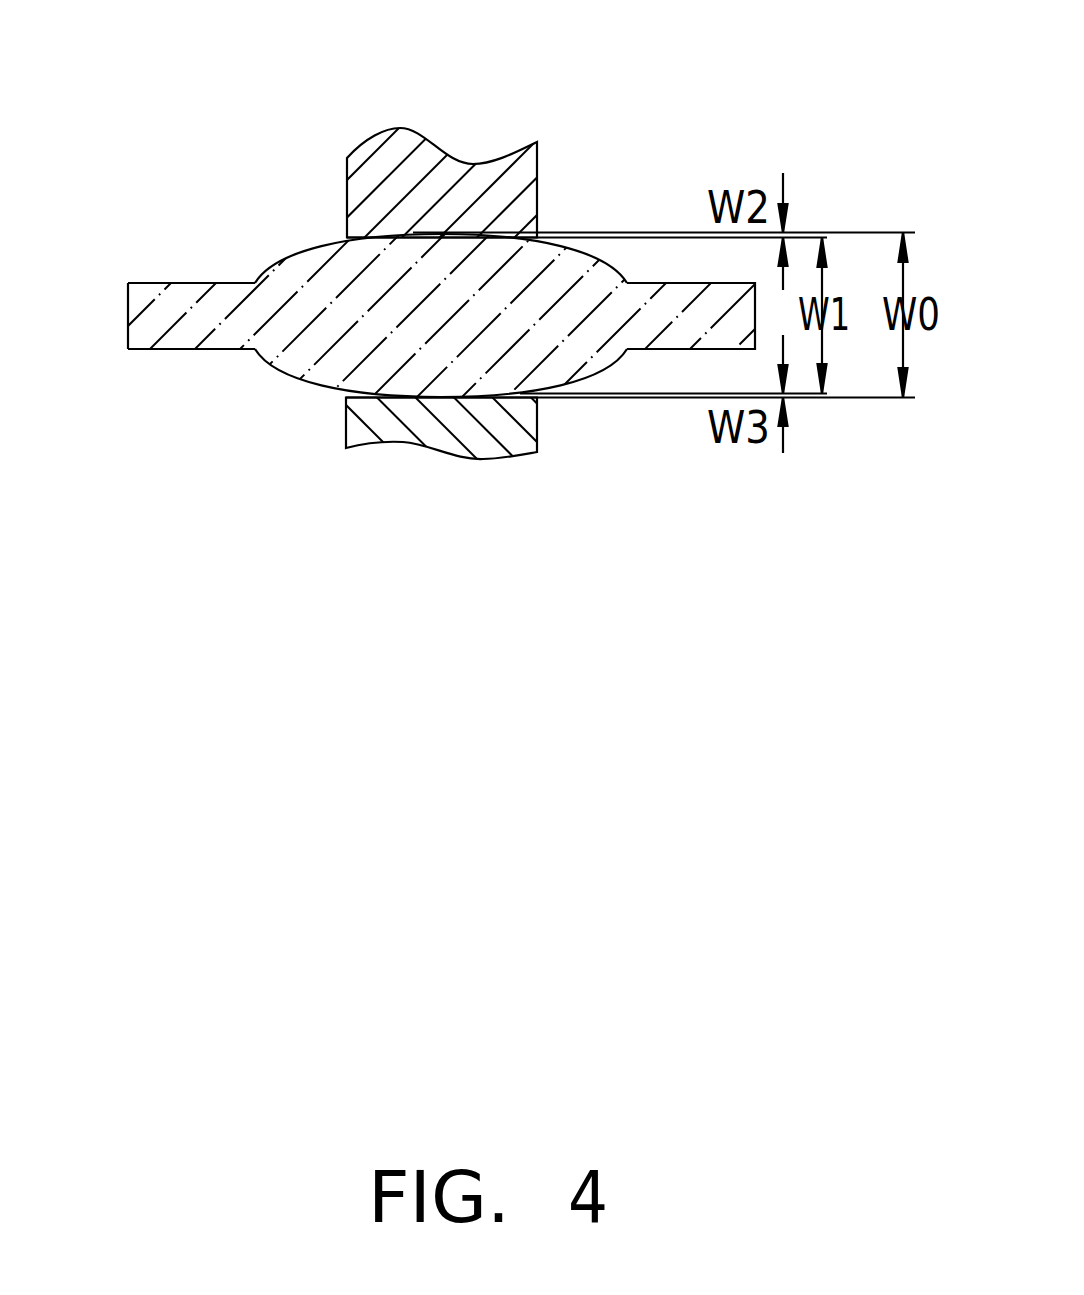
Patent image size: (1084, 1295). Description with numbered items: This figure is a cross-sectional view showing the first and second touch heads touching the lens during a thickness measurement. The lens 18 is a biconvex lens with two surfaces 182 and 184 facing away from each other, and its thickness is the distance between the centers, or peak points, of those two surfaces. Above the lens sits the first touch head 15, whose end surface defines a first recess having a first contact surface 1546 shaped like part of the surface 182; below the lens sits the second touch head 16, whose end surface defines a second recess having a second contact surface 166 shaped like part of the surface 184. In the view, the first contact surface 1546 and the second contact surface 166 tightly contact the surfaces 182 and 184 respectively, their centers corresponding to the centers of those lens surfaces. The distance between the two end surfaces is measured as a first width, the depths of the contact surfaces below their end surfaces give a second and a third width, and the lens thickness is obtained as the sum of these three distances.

The first touch head 15 is at (419, 165).
The first contact surface 1546 is at (443, 232).
The second touch head 16 is at (382, 428).
The second contact surface 166 is at (442, 402).
The lens 18 is at (185, 302).
The surface 182 is at (311, 252).
The surface 184 is at (305, 383).